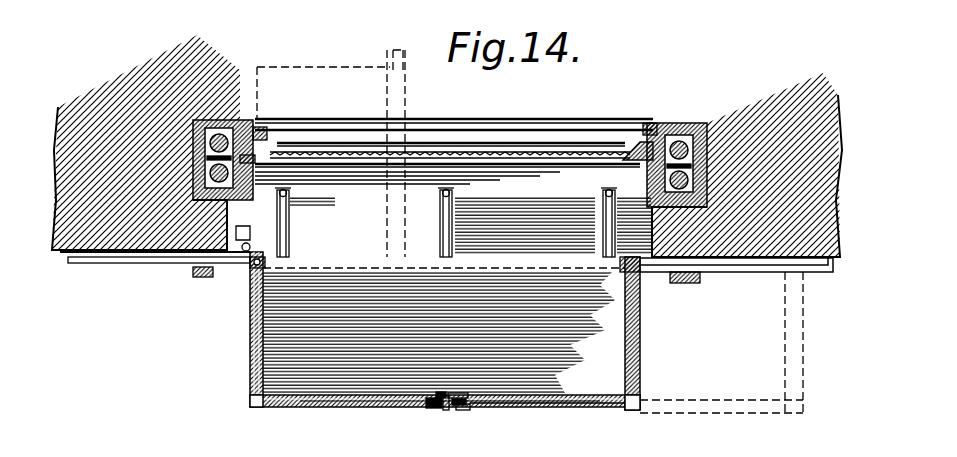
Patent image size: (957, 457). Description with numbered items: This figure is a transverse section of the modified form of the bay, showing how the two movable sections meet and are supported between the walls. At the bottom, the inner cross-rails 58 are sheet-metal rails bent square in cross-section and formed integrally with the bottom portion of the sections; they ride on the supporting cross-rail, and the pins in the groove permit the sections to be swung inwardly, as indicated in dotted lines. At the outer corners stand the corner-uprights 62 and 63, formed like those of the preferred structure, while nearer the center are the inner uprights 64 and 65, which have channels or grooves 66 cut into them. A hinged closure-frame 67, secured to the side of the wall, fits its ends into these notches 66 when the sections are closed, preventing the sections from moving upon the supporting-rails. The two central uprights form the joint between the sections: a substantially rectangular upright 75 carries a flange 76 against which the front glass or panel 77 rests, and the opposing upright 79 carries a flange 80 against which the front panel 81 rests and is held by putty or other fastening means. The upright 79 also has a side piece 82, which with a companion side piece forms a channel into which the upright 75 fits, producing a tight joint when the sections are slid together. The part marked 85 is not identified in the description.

The inner cross-rail 58 is at (310, 408).
The corner-upright 62 is at (253, 408).
The corner-upright 63 is at (640, 410).
The inner upright 64 is at (262, 266).
The inner upright 65 is at (622, 272).
The channel or groove 66 is at (250, 262).
The hinged closure-frame 67 is at (250, 252).
The upright 75 is at (432, 407).
The flange 76 is at (441, 392).
The front glass or panel 77 is at (356, 398).
The upright 79 is at (464, 410).
The flange 80 is at (466, 399).
The front panel 81 is at (530, 401).
The side piece 82 is at (458, 393).
The latch pin 85 is at (446, 410).